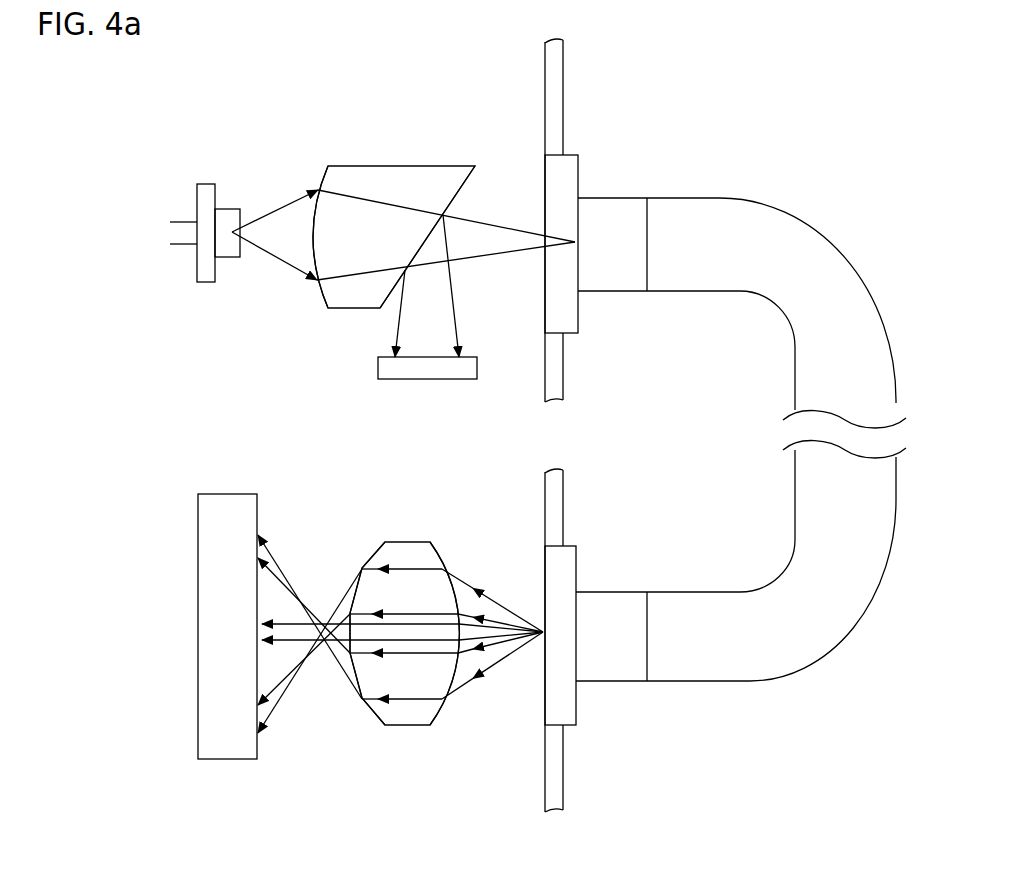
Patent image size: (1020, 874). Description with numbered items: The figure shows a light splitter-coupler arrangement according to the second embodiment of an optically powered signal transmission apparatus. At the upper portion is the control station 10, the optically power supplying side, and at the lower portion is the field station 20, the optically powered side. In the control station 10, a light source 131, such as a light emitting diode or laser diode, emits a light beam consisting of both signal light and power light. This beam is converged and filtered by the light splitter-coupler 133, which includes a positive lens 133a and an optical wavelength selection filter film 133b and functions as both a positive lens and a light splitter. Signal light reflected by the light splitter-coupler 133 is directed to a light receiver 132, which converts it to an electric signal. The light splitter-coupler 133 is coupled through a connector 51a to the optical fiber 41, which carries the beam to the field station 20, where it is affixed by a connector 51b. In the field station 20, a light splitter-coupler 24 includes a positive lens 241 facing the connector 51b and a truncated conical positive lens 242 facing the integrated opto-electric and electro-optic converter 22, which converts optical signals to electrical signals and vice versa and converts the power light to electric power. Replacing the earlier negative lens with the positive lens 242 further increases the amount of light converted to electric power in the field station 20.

The control station 10 is at (277, 88).
The field station 20 is at (313, 488).
The integrated opto-electric and electro-optic converter 22 is at (215, 710).
The light splitter-coupler 24 is at (412, 555).
The positive lens 241 is at (438, 553).
The truncated conical positive lens 242 is at (357, 675).
The optical fiber 41 is at (705, 215).
The connector 51a is at (613, 210).
The connector 51b is at (608, 598).
The light source 131 is at (207, 183).
The light receiver 132 is at (450, 373).
The light splitter-coupler 133 is at (402, 178).
The positive lens 133a is at (317, 217).
The optical wavelength selection filter film 133b is at (460, 189).